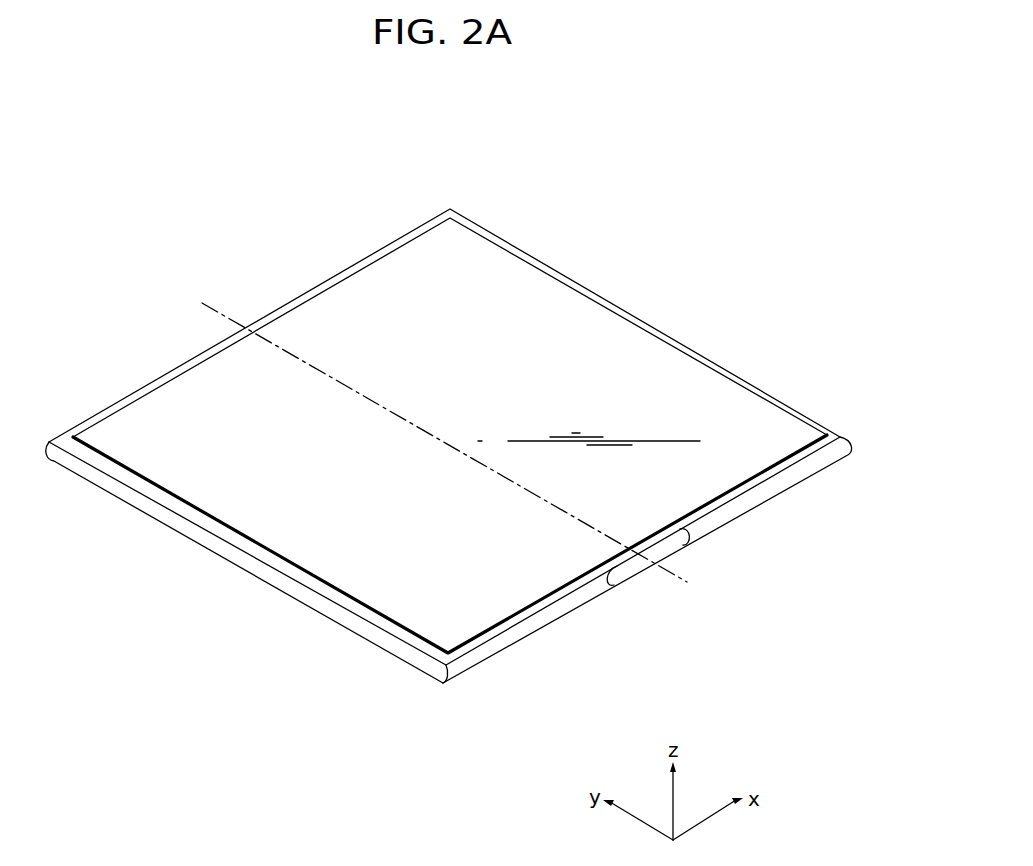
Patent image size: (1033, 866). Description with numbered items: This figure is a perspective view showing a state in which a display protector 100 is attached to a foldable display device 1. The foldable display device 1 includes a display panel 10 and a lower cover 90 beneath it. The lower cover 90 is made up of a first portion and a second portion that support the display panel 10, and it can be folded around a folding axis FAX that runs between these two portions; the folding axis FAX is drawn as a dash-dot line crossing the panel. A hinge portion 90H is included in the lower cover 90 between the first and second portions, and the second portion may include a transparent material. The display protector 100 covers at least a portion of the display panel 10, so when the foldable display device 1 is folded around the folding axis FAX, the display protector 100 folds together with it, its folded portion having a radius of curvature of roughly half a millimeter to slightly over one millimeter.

The foldable display device 1 is at (449, 420).
The display panel 10 is at (556, 265).
The display protector 100 is at (375, 285).
The folding axis FAX is at (425, 429).
The lower cover 90 is at (806, 586).
The hinge portion 90H is at (640, 567).